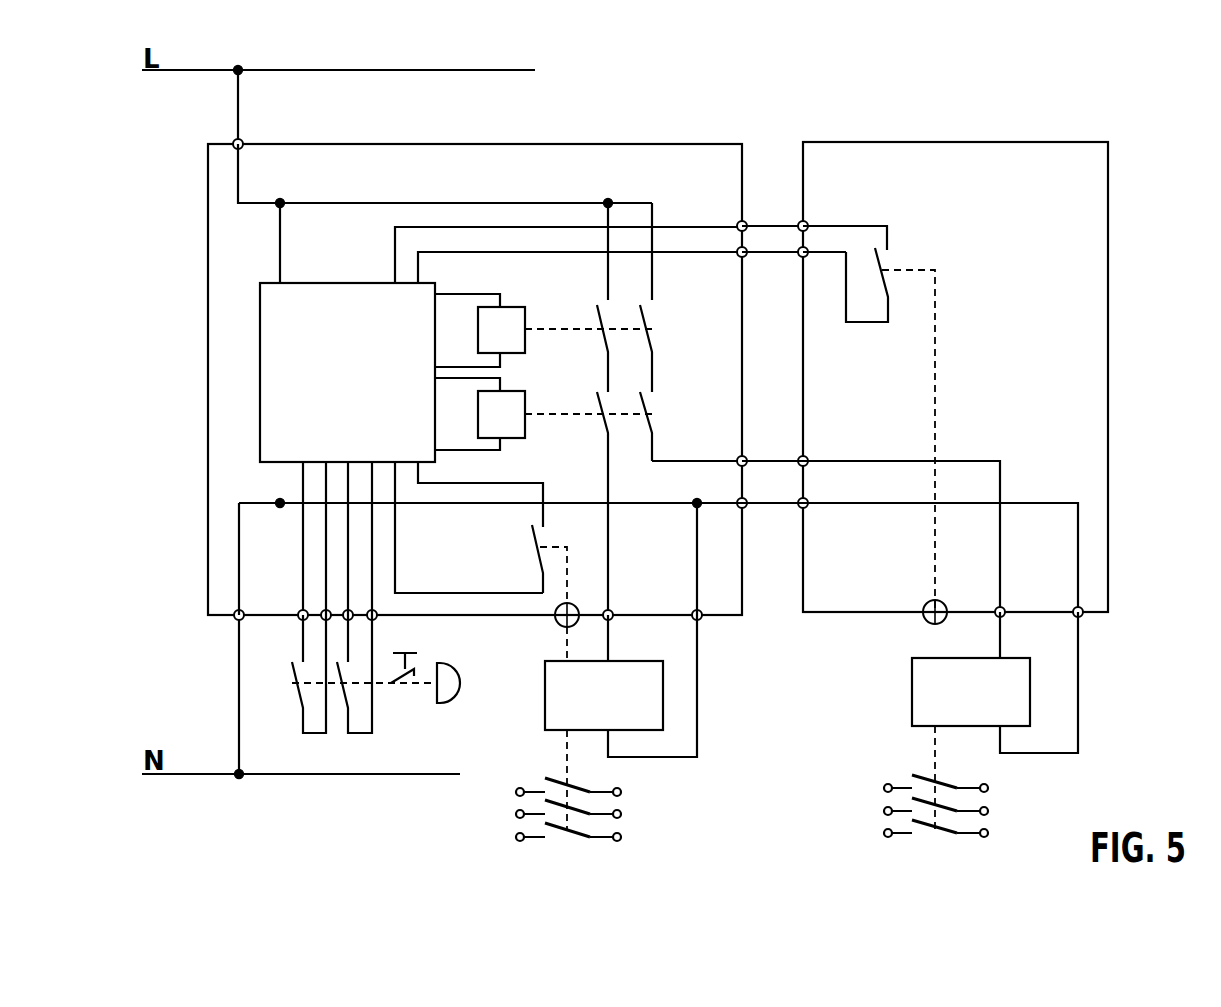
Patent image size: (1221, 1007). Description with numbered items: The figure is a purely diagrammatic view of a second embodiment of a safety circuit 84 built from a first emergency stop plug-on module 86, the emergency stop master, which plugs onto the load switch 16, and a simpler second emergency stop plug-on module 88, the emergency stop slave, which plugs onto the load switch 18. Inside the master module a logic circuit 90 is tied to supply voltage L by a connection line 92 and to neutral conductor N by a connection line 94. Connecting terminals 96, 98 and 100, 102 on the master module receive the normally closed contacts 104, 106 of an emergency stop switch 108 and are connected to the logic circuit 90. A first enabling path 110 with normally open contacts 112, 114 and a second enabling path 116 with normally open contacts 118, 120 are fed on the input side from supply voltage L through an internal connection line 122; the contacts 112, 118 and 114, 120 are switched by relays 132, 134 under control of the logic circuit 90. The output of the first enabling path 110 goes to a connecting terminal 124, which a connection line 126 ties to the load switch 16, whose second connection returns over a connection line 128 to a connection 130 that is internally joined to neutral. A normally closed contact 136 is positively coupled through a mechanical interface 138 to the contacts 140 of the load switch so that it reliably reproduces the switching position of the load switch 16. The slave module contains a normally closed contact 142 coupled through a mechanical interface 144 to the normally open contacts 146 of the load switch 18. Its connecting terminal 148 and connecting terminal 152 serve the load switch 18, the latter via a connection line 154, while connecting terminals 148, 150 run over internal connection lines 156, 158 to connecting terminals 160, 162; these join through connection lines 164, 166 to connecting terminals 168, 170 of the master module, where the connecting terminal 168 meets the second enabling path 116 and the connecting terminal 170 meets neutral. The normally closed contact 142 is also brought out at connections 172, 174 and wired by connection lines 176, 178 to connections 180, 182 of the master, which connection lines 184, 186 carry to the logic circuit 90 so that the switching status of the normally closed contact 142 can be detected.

The load switch 16 is at (619, 707).
The load switch 18 is at (984, 705).
The safety circuit 84 is at (629, 56).
The first emergency stop plug-on module 86 is at (530, 144).
The second emergency stop plug-on module 88 is at (1010, 142).
The logic circuit 90 is at (326, 386).
The connection line 92 is at (238, 110).
The connection line 94 is at (238, 692).
The connecting terminal 96 is at (302, 622).
The connecting terminal 98 is at (302, 610).
The connecting terminal 100 is at (376, 620).
The connecting terminal 102 is at (374, 611).
The normally closed contact 104 is at (295, 712).
The normally closed contact 106 is at (340, 712).
The emergency stop switch 108 is at (467, 708).
The first enabling path 110 is at (606, 203).
The normally open contact 112 is at (600, 332).
The normally open contact 114 is at (600, 420).
The second enabling path 116 is at (652, 212).
The normally open contact 118 is at (655, 330).
The normally open contact 120 is at (652, 403).
The internal connection line 122 is at (335, 203).
The connecting terminal 124 is at (610, 610).
The connection line 126 is at (612, 638).
The connection line 128 is at (700, 710).
The connection 130 is at (700, 619).
The relay 132 is at (478, 329).
The relay 134 is at (478, 414).
The normally closed contact 136 is at (532, 542).
The mechanical interface 138 is at (558, 625).
The contacts 140 is at (558, 836).
The normally closed contact 142 is at (882, 265).
The mechanical interface 144 is at (930, 625).
The normally open contacts 146 is at (925, 835).
The connecting terminal 148 is at (998, 607).
The connecting terminal 150 is at (1002, 640).
The connecting terminal 152 is at (1076, 607).
The connection line 154 is at (1080, 690).
The internal connection line 156 is at (965, 461).
The internal connection line 158 is at (1042, 503).
The connecting terminal 160 is at (806, 459).
The connecting terminal 162 is at (806, 506).
The connection line 164 is at (773, 506).
The connection line 166 is at (773, 461).
The connecting terminal 168 is at (740, 459).
The connecting terminal 170 is at (740, 503).
The connection 172 is at (806, 224).
The connection 174 is at (806, 258).
The connection line 176 is at (773, 226).
The connection line 178 is at (775, 255).
The connection 180 is at (740, 222).
The connection 182 is at (742, 256).
The connection line 184 is at (430, 227).
The connection line 186 is at (497, 252).